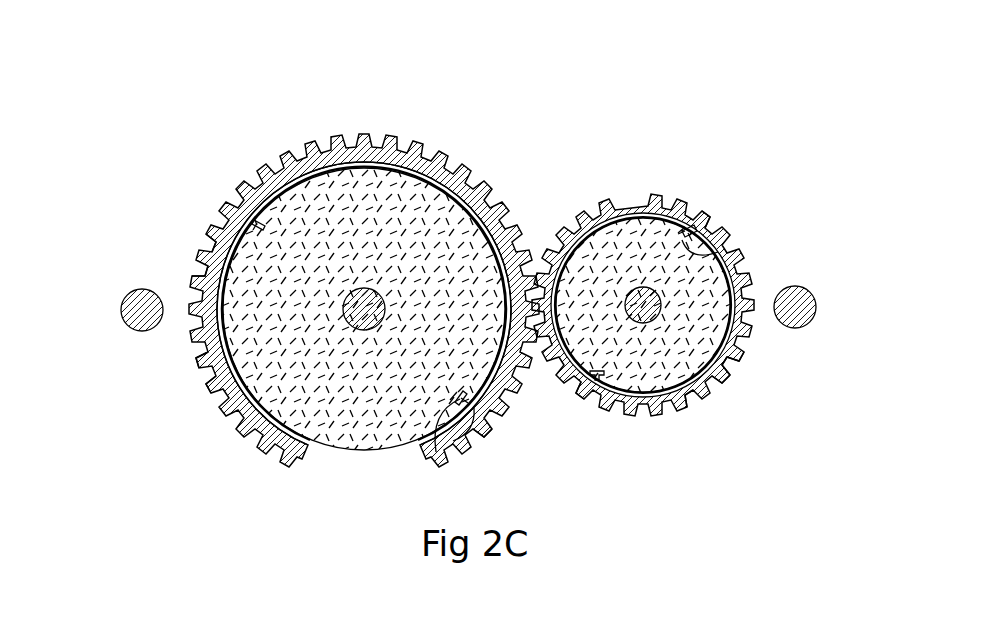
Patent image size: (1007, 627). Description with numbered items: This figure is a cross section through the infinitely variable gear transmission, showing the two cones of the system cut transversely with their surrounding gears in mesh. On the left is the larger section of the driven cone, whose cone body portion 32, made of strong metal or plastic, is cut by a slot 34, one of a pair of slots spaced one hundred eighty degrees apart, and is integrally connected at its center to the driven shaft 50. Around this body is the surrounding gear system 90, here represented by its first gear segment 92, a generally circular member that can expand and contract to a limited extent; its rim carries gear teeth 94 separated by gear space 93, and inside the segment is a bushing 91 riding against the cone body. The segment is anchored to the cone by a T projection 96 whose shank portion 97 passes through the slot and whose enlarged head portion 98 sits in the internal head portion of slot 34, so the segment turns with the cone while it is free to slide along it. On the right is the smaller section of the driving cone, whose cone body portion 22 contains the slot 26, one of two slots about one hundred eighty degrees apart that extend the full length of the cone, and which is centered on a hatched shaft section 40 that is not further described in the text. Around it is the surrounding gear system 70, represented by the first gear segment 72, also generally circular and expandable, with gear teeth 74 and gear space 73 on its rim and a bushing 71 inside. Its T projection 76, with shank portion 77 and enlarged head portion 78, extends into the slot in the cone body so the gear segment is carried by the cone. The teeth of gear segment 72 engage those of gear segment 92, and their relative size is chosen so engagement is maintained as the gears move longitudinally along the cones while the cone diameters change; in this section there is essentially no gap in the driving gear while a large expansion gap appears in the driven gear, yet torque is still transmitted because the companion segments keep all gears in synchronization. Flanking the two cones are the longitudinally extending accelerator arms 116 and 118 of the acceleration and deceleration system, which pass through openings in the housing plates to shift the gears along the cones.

The surrounding gear system 90 is at (175, 413).
The slot 34 is at (226, 190).
The cone body portion 32 is at (344, 212).
The bushing 91 is at (394, 168).
The first gear segment 92 is at (170, 368).
The gear space 93 is at (212, 238).
The gear teeth 94 is at (205, 252).
The T projection 96 is at (496, 432).
The shank portion 97 is at (462, 440).
The enlarged head portion 98 is at (437, 440).
The driven shaft 50 is at (365, 330).
The accelerator arm 118 is at (119, 307).
The surrounding gear system 70 is at (768, 412).
The first gear segment 72 is at (769, 224).
The cone body portion 22 is at (604, 245).
The slot 26 is at (586, 402).
The bushing 71 is at (688, 392).
The gear space 73 is at (742, 368).
The gear teeth 74 is at (748, 352).
The T projection 76 is at (716, 207).
The shank portion 77 is at (685, 231).
The enlarged head portion 78 is at (712, 258).
The second shaft 40 is at (643, 323).
The accelerator arm 116 is at (818, 305).